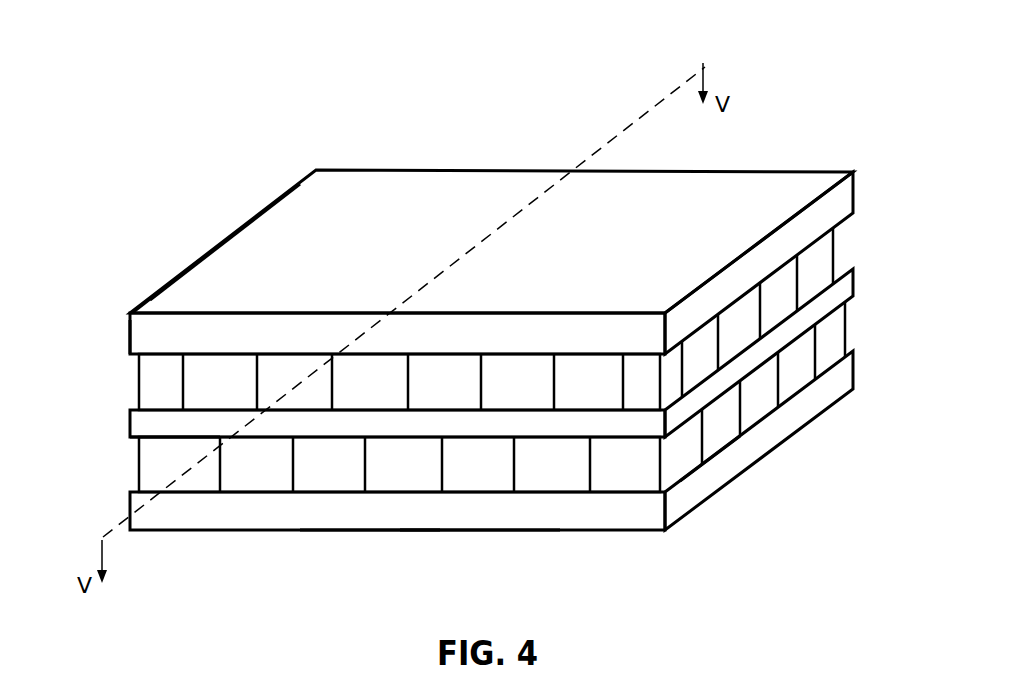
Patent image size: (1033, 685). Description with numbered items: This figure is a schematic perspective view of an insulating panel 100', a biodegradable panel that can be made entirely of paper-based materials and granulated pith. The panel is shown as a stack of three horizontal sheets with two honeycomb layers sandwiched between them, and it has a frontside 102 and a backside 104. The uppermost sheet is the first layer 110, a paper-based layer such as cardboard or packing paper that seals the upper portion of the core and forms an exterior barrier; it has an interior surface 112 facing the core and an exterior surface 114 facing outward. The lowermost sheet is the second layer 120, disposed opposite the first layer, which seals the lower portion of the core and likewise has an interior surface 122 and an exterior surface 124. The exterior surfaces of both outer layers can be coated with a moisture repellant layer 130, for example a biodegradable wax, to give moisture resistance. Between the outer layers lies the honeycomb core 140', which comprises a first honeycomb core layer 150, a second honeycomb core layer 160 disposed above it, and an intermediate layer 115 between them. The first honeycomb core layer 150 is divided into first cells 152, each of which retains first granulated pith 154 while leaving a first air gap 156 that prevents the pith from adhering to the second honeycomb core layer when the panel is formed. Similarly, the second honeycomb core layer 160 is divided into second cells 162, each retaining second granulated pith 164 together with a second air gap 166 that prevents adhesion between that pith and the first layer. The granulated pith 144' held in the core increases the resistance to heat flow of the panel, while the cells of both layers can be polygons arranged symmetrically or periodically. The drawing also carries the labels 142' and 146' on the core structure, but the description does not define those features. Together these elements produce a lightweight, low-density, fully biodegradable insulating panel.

The insulating panel 100' is at (490, 318).
The frontside 102 is at (800, 146).
The backside 104 is at (598, 546).
The first layer 110 is at (835, 200).
The interior surface 112 is at (130, 352).
The exterior surface 114 is at (278, 233).
The intermediate layer 115 is at (177, 427).
The second layer 120 is at (687, 512).
The interior surface 122 is at (700, 480).
The exterior surface 124 is at (423, 532).
The moisture repellant layer 130 is at (232, 280).
The honeycomb core 140' is at (441, 379).
The core walls 142' is at (403, 475).
The granulated pith 144' is at (326, 233).
The second cell 146' is at (406, 219).
The first honeycomb core layer 150 is at (536, 397).
The first cells 152 is at (717, 420).
The first granulated pith 154 is at (511, 290).
The first air gaps 156 is at (591, 275).
The second honeycomb core layer 160 is at (544, 319).
The second cells 162 is at (735, 322).
The second granulated pith 164 is at (600, 210).
The second air gaps 166 is at (679, 195).